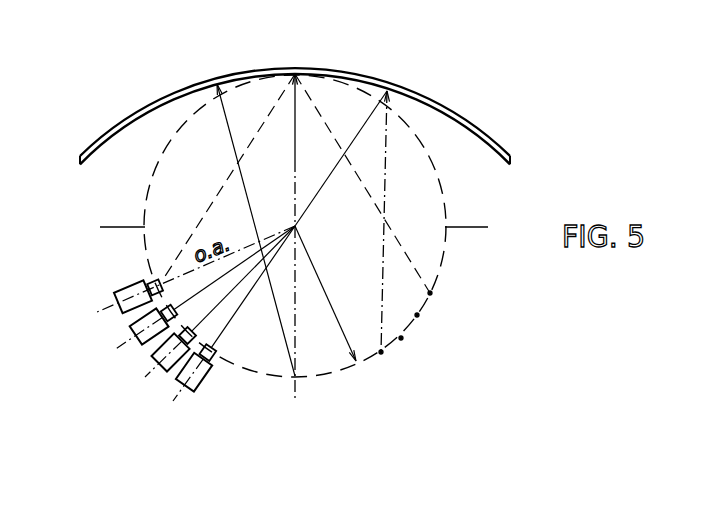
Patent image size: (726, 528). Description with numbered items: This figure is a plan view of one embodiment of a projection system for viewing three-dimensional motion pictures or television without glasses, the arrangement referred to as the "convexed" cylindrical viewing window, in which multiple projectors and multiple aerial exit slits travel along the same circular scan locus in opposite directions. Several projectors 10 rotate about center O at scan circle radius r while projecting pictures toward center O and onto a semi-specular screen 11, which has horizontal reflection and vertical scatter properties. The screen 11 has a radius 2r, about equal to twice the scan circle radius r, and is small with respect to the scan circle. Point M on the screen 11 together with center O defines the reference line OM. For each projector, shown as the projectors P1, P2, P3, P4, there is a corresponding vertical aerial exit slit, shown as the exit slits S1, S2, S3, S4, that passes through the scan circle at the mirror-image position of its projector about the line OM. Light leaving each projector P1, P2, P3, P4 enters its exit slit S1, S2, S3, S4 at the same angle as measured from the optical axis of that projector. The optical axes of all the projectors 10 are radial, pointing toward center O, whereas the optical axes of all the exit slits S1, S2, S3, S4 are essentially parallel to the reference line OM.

The projectors 10 is at (148, 312).
The semi-specular screen 11 is at (136, 110).
The point M on screen M is at (295, 99).
The center O is at (294, 279).
The screen radius 2r is at (256, 230).
The scan circle radius r is at (325, 293).
The first projector P1 is at (160, 278).
The second projector P2 is at (173, 309).
The third projector P3 is at (196, 334).
The fourth projector P4 is at (231, 357).
The first vertical aerial exit slit S1 is at (430, 293).
The second vertical aerial exit slit S2 is at (417, 315).
The third vertical aerial exit slit S3 is at (401, 338).
The fourth vertical aerial exit slit S4 is at (381, 352).